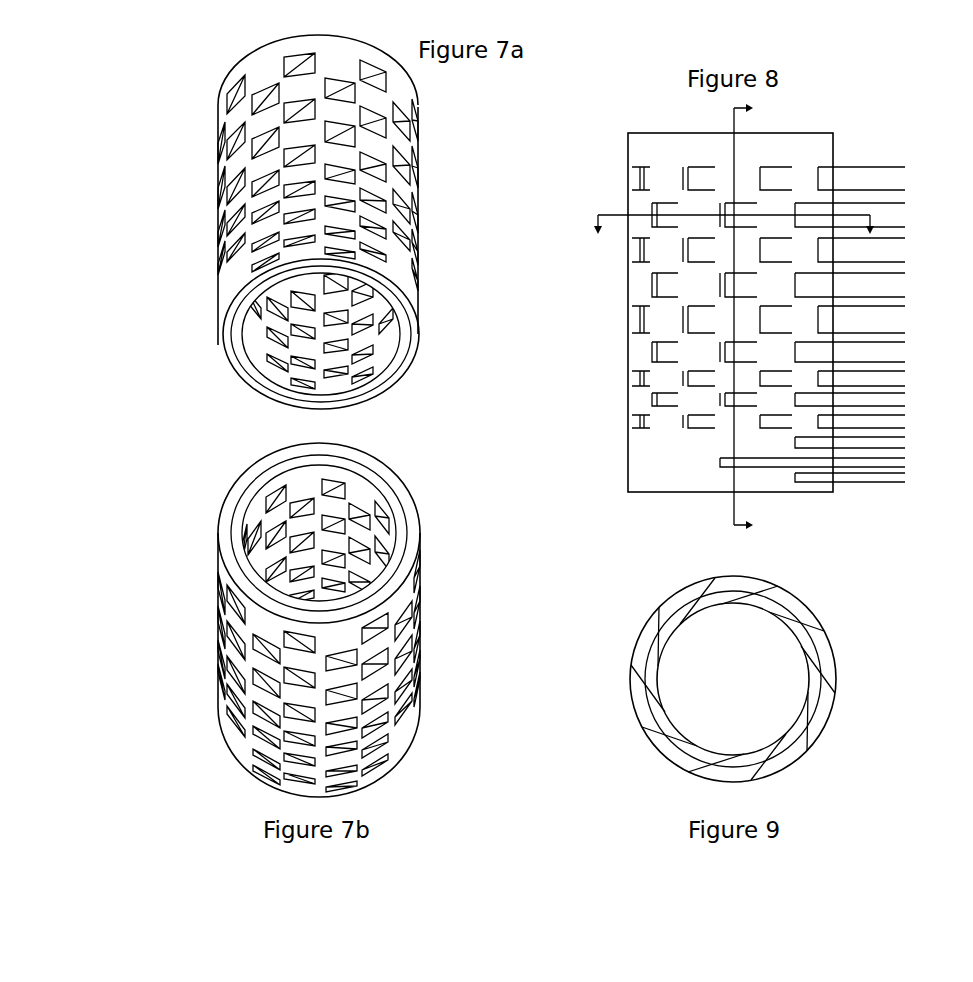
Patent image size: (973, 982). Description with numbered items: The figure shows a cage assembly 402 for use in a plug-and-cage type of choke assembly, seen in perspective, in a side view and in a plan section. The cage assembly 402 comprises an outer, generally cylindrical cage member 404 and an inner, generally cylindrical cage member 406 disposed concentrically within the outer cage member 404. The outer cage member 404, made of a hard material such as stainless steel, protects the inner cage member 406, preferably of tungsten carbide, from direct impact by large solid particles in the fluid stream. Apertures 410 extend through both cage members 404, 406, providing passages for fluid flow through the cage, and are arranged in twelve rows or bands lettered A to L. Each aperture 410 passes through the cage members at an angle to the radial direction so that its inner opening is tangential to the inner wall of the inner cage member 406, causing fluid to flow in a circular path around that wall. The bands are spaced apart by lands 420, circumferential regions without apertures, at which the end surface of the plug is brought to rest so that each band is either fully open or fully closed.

In FIG. 7a, the cage assembly 402 is at (441, 138).
In FIG. 7b, the cage assembly 402 is at (196, 478).
In FIG. 8, the cage assembly 402 is at (859, 140).
In FIG. 9, the cage assembly 402 is at (849, 640).
In FIG. 7a, the outer cage member 404 is at (233, 305).
In FIG. 7b, the outer cage member 404 is at (390, 472).
In FIG. 8, the outer cage member 404 is at (677, 148).
In FIG. 9, the outer cage member 404 is at (643, 650).
In FIG. 7a, the inner cage member 406 is at (237, 352).
In FIG. 7b, the inner cage member 406 is at (238, 545).
In FIG. 9, the inner cage member 406 is at (703, 601).
In FIG. 7a, the apertures 410 is at (260, 218).
In FIG. 7b, the apertures 410 is at (319, 671).
In FIG. 8, the apertures 410 is at (660, 355).
In FIG. 9, the apertures 410 is at (660, 745).
In FIG. 8, the lands 420 is at (633, 300).